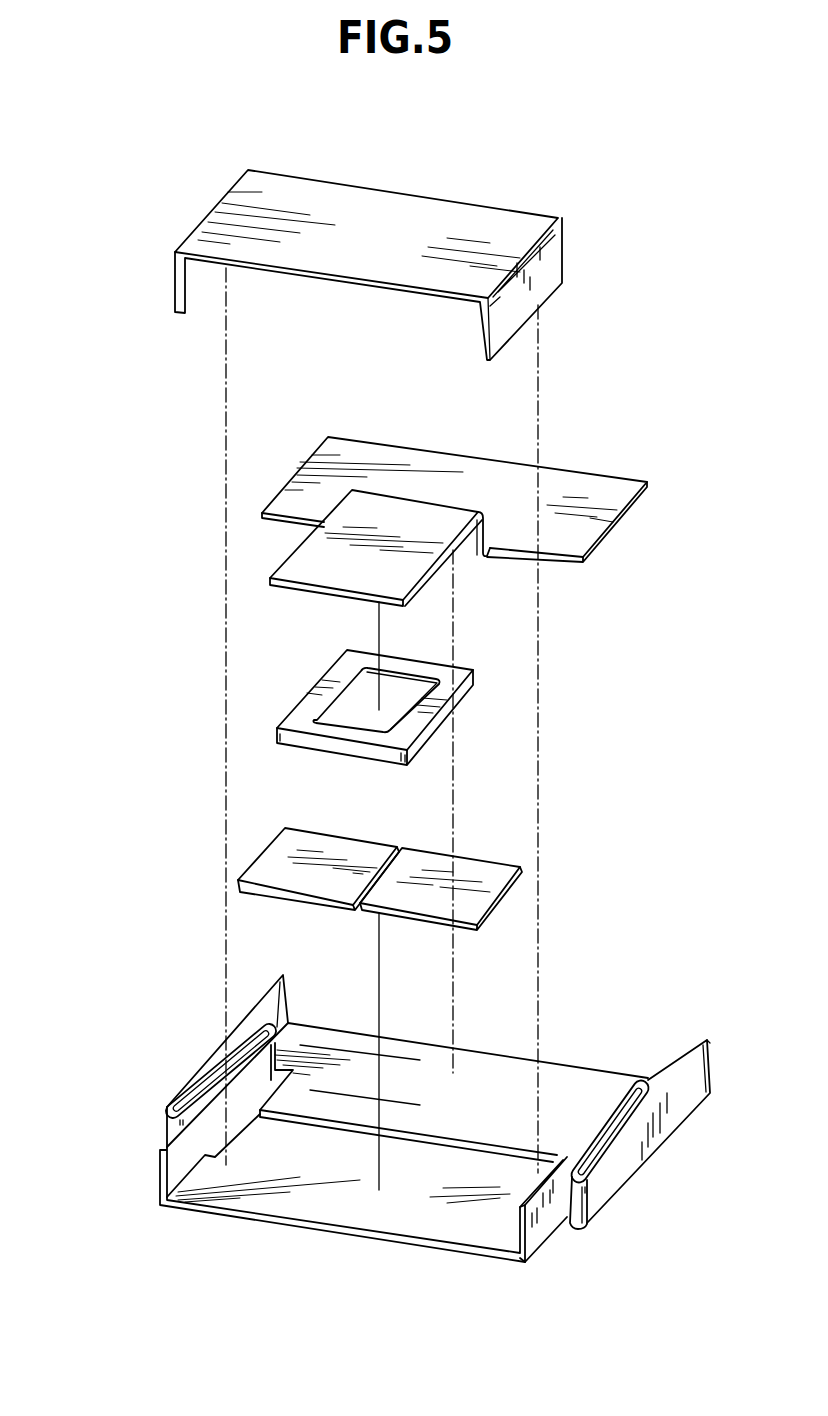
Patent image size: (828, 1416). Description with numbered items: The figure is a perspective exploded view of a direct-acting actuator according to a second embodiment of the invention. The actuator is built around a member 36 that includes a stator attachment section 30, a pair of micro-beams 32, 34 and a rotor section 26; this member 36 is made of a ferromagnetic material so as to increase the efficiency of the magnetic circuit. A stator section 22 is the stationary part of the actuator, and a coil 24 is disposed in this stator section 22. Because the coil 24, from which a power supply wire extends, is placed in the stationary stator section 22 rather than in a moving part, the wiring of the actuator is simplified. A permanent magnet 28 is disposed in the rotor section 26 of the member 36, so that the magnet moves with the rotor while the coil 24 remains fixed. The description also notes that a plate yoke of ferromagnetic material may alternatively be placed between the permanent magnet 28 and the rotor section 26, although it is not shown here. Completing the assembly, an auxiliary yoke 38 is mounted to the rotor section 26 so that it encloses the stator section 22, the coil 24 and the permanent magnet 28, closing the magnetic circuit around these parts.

The stator section 22 is at (307, 562).
The coil 24 is at (302, 715).
The rotor section 26 is at (404, 1126).
The permanent magnet 28 is at (278, 860).
The stator attachment section 30 is at (492, 1083).
The micro-beam 32 is at (602, 1188).
The micro-beam 34 is at (165, 1109).
The member 36 is at (604, 1042).
The auxiliary yoke 38 is at (383, 222).